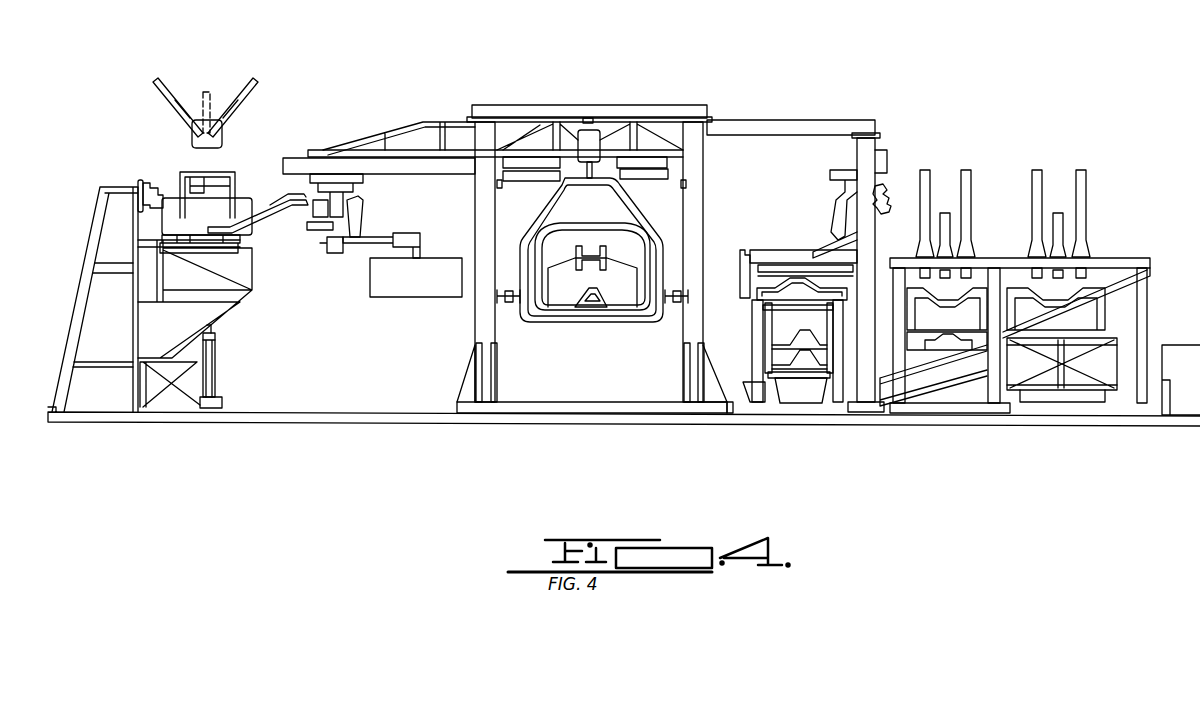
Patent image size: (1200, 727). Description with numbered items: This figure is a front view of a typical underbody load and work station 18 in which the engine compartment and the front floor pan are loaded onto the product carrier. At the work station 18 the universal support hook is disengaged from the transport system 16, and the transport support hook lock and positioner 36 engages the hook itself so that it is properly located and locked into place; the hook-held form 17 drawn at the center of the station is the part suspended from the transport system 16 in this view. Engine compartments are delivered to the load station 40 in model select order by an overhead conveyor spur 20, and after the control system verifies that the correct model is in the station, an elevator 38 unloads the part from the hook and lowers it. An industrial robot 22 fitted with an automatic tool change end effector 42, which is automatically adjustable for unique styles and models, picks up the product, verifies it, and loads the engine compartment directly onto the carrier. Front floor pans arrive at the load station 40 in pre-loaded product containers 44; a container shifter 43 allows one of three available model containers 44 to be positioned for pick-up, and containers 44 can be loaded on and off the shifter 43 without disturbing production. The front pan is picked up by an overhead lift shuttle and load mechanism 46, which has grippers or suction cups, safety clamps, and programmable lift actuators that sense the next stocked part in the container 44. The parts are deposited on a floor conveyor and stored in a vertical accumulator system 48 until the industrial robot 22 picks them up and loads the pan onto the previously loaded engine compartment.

The transport system 16 is at (596, 130).
The mold form 17 is at (645, 212).
The work station 18 is at (691, 72).
The overhead conveyor spur 20 is at (282, 70).
The industrial robot 22 is at (319, 259).
The transport support hook lock and positioner 36 is at (668, 314).
The elevator 38 is at (244, 328).
The load station 40 is at (1112, 210).
The automatic tool change end effector 42 is at (428, 228).
The container shifter 43 is at (979, 149).
The product container 44 is at (798, 370).
The overhead lift shuttle and load mechanism 46 is at (887, 375).
The vertical accumulator system 48 is at (760, 436).